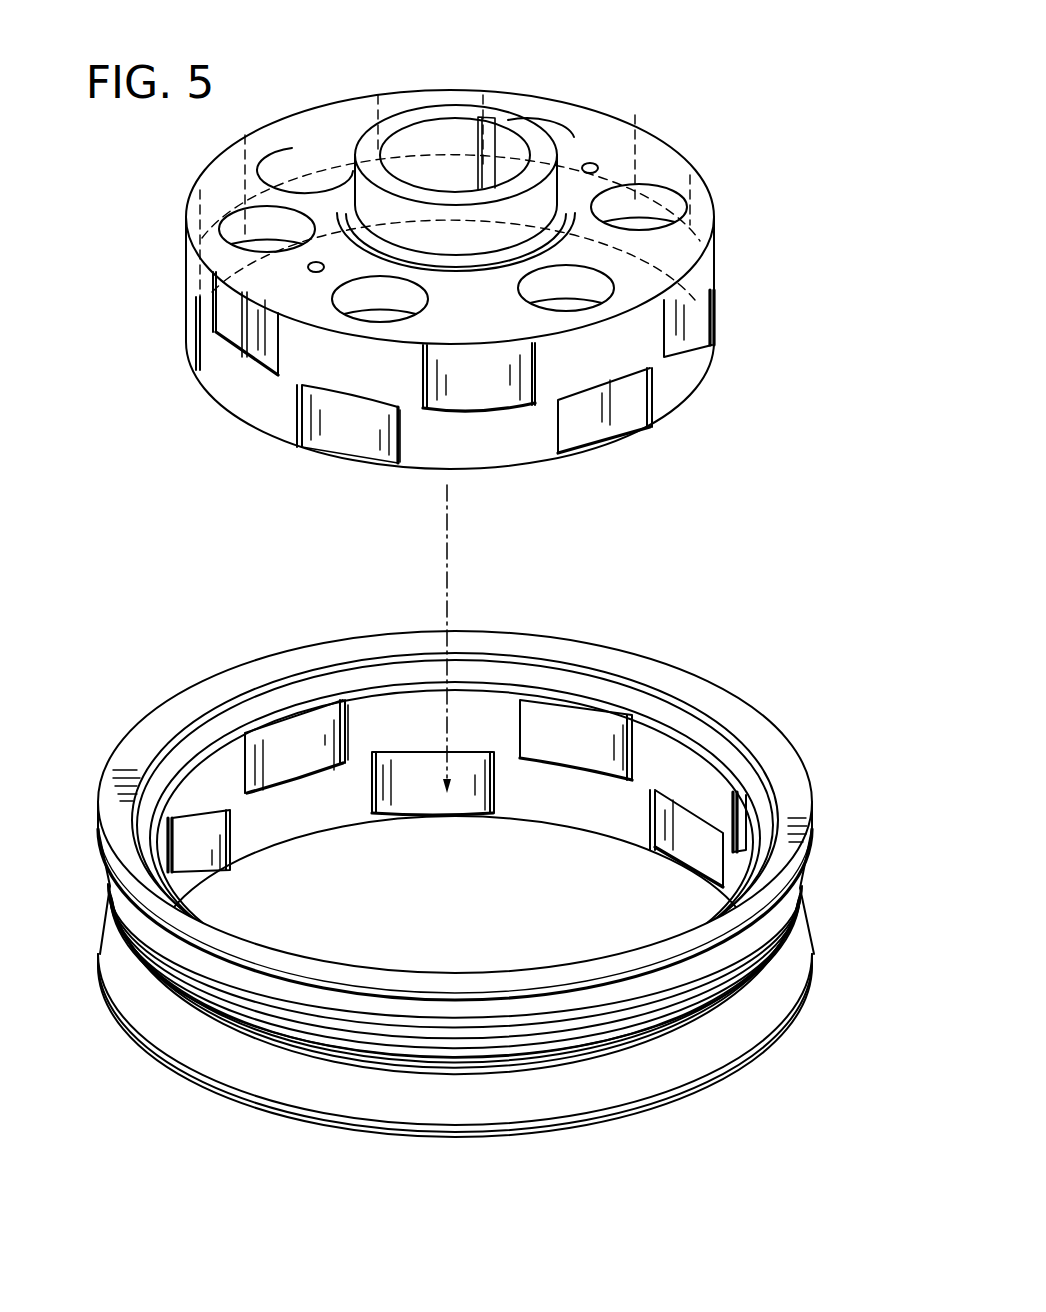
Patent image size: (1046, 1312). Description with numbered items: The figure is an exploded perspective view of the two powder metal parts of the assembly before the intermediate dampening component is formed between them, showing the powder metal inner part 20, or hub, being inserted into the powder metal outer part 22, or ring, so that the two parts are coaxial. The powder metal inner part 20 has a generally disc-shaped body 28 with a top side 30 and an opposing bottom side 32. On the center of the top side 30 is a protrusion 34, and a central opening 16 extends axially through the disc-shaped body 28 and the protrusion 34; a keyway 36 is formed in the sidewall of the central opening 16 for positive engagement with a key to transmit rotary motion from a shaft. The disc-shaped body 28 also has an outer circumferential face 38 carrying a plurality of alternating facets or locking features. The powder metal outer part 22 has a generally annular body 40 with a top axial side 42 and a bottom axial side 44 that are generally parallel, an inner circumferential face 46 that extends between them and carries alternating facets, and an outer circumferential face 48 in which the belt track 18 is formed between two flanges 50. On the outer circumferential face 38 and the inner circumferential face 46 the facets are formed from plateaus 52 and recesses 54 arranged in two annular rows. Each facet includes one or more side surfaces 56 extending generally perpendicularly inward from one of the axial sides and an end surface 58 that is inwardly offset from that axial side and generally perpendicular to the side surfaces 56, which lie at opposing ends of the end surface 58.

The central opening 16 is at (438, 136).
The belt track 18 is at (820, 885).
The powder metal inner part 20 is at (671, 101).
The powder metal outer part 22 is at (720, 665).
The disc-shaped body 28 is at (685, 272).
The top side 30 is at (590, 131).
The bottom side 32 is at (668, 424).
The protrusion 34 is at (457, 235).
The keyway 36 is at (492, 160).
The outer circumferential face 38 is at (700, 350).
The annular body 40 is at (703, 730).
The top axial side 42 is at (625, 691).
The bottom axial side 44 is at (630, 1128).
The inner circumferential face 46 is at (580, 800).
The outer circumferential face 48 is at (140, 999).
The flanges 50 is at (805, 800).
The plateaus 52 is at (694, 372).
The recesses 54 is at (690, 318).
The side surfaces 56 is at (298, 398).
The end surface 58 is at (350, 402).